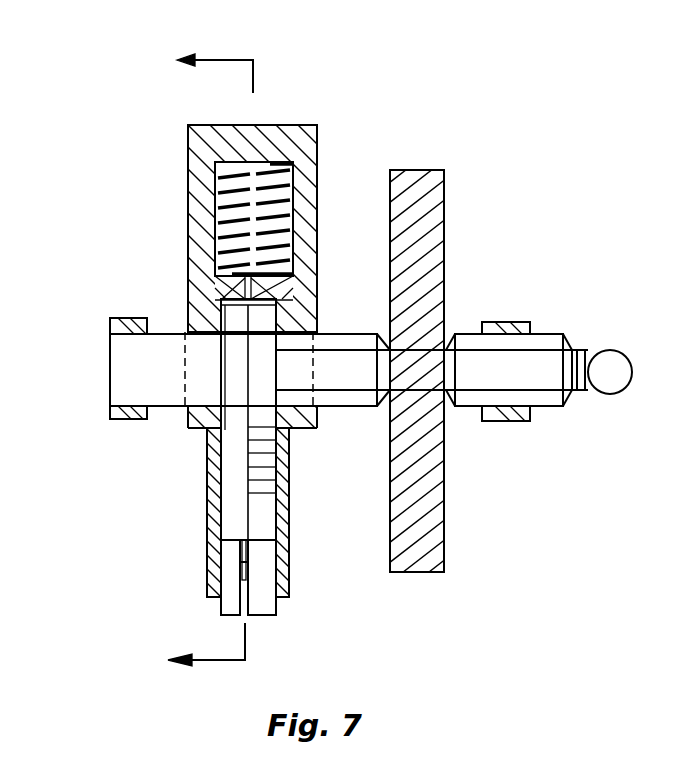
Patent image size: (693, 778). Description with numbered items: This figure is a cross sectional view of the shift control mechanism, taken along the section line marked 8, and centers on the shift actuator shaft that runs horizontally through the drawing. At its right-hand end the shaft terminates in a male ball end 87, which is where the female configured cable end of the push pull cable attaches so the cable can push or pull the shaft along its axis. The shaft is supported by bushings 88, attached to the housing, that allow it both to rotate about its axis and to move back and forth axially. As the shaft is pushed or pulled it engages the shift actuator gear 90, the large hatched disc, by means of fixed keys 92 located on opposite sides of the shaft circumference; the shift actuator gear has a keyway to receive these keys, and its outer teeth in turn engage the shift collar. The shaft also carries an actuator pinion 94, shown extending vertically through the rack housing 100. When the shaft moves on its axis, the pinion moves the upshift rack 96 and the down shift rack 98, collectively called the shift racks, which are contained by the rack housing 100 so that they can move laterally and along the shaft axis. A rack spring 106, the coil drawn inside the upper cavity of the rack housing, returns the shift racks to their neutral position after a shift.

The section line 8- 8 is at (199, 361).
The male ball end 87 is at (607, 367).
The bushings 88 is at (128, 320).
The shift actuator gear 90 is at (432, 212).
The fixed keys 92 is at (353, 399).
The actuator pinion 94 is at (257, 330).
The upshift rack 96 is at (282, 580).
The down shift rack 98 is at (212, 530).
The rack housing 100 is at (298, 138).
The rack spring 106 is at (227, 188).